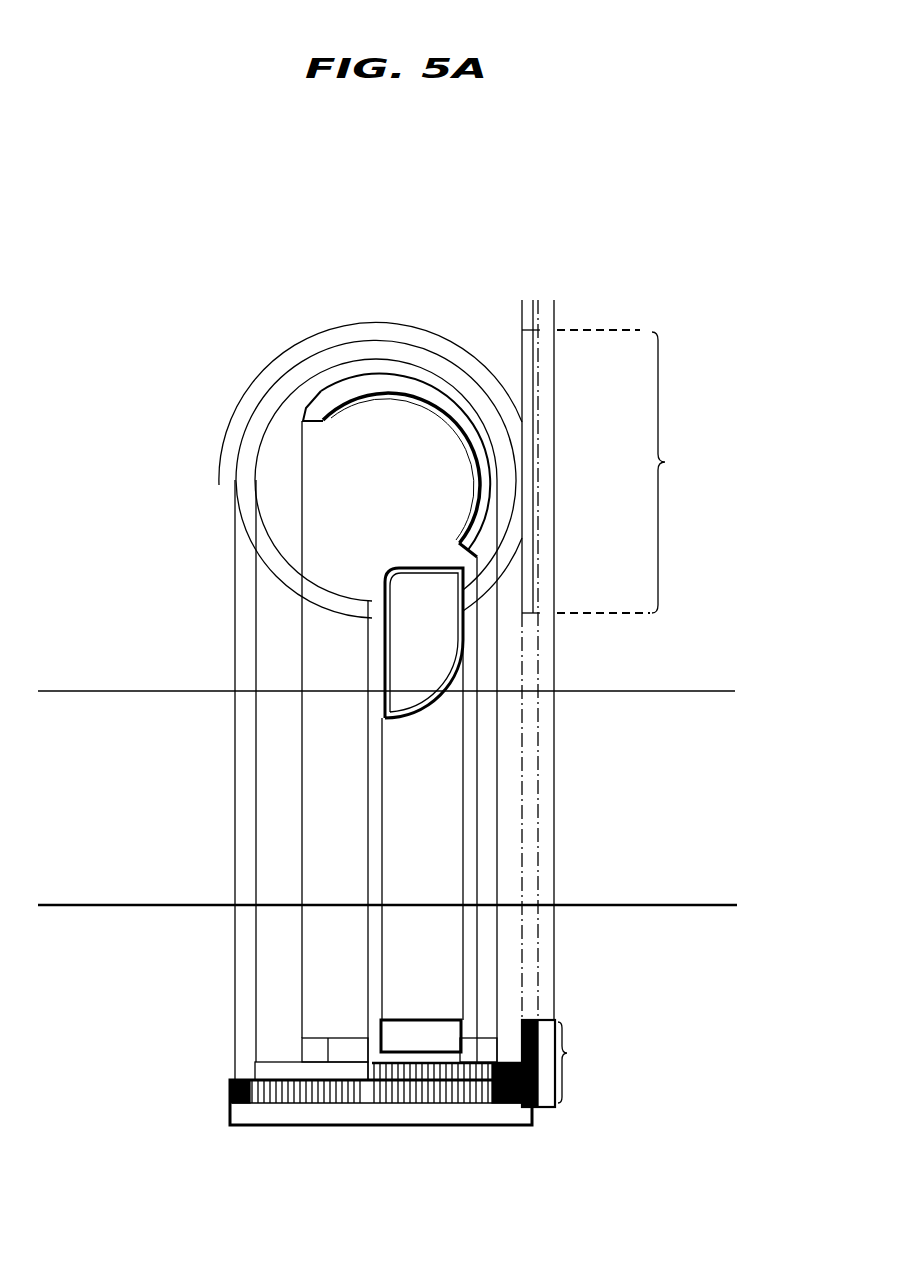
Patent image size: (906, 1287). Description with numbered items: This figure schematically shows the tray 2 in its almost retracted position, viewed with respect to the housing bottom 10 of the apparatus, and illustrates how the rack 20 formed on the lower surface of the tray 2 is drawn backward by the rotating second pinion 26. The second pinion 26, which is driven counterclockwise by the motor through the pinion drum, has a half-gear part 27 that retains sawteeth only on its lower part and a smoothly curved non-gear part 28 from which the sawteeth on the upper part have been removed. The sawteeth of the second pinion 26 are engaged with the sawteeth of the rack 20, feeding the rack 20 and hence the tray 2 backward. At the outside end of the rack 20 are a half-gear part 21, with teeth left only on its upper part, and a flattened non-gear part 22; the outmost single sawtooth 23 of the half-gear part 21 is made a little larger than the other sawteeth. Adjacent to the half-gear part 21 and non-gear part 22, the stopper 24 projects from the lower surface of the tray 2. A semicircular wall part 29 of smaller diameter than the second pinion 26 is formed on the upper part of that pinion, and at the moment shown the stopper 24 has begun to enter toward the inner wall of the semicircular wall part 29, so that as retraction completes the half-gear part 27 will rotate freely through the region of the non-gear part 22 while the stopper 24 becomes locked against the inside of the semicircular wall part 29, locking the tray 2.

The tray 2 is at (707, 890).
The housing bottom 10 is at (710, 675).
The rack 20 is at (545, 340).
The half-gear part 21 is at (653, 699).
The non-gear part 22 is at (585, 1066).
The outmost single sawtooth 23 is at (527, 1024).
The stopper 24 is at (430, 688).
The second pinion 26 is at (383, 1103).
The half-gear part 27 is at (243, 508).
The non-gear part 28 is at (287, 572).
The semicircular wall part 29 is at (326, 391).